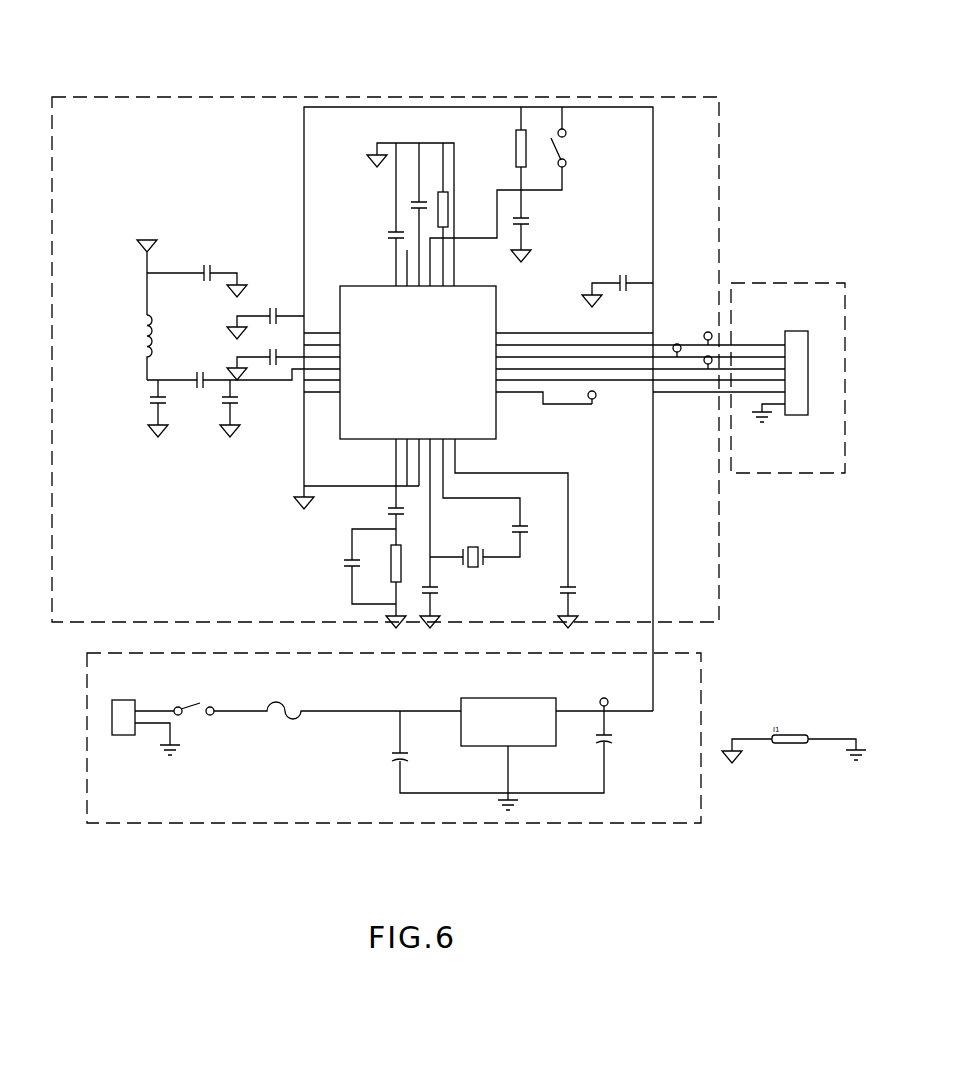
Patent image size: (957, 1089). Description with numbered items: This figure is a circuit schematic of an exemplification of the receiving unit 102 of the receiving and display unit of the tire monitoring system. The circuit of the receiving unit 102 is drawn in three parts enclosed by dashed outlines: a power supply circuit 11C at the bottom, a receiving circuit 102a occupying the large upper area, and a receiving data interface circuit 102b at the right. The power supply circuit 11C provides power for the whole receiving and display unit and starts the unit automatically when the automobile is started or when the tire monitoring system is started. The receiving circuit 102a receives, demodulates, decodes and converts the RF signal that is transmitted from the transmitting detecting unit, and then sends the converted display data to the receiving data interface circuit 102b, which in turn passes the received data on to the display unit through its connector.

The receiving unit 102 is at (440, 82).
The receiving circuit 102a is at (707, 183).
The receiving data interface circuit 102b is at (832, 432).
The power supply circuit 11C is at (658, 812).